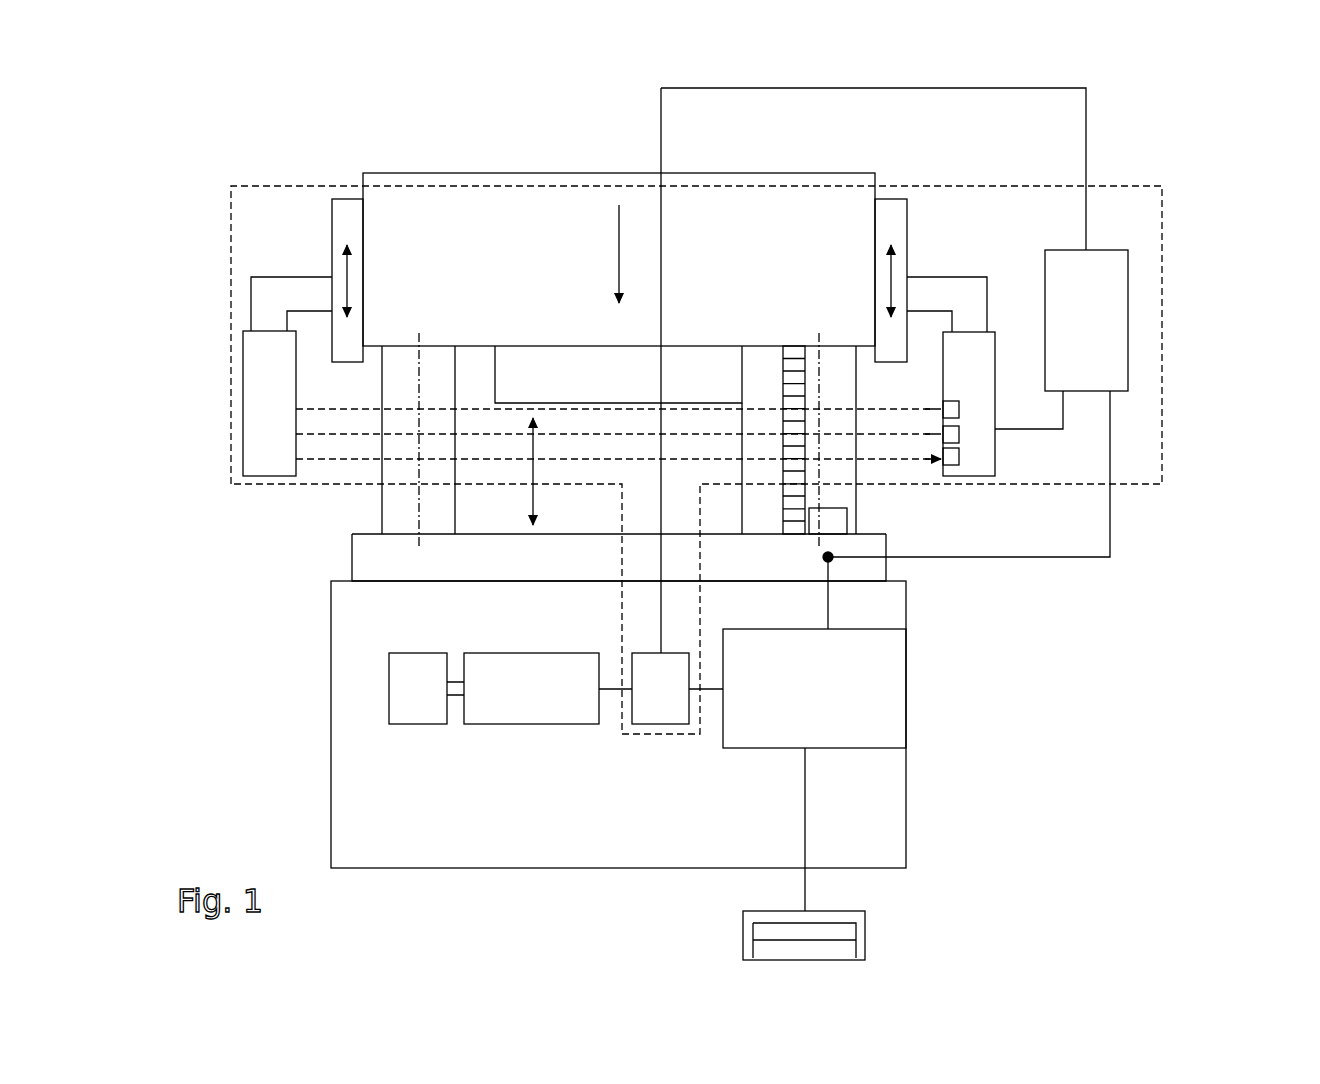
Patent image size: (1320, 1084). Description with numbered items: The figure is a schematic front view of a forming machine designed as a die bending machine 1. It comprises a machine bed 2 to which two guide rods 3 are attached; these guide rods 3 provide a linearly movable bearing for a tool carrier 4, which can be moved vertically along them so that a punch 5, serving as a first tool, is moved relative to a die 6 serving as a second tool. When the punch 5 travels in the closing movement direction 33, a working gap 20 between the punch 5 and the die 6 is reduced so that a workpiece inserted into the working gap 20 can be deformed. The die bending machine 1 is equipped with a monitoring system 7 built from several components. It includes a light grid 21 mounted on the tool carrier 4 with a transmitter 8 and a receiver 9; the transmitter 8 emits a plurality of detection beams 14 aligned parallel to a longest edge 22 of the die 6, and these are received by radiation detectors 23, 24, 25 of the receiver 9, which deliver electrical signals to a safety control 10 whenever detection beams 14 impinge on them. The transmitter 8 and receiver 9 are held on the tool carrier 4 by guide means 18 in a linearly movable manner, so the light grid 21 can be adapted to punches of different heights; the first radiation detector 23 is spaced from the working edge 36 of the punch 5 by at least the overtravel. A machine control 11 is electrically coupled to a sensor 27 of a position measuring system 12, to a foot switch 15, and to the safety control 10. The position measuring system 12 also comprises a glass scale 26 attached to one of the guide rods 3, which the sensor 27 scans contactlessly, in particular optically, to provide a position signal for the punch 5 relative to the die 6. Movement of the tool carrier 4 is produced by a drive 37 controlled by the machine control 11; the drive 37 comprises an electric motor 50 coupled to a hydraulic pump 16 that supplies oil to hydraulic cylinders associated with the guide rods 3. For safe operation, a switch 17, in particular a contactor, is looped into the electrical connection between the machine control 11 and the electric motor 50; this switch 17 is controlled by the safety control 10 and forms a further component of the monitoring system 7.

The die bending machine 1 is at (1103, 166).
The machine bed 2 is at (890, 814).
The guide rods 3 is at (390, 494).
The tool carrier 4 is at (813, 197).
The punch 5 is at (572, 365).
The die 6 is at (372, 565).
The monitoring system 7 is at (287, 185).
The transmitter 8 is at (246, 365).
The receiver 9 is at (990, 367).
The safety control 10 is at (1113, 322).
The machine control 11 is at (893, 688).
The position measuring system 12 is at (808, 556).
The detection beams 14 is at (485, 433).
The foot switch 15 is at (860, 916).
The hydraulic pump 16 is at (400, 710).
The switch 17 is at (650, 713).
The guide means 18 is at (351, 208).
The working gap 20 is at (533, 447).
The light grid 21 is at (318, 472).
The longest edge 22 is at (470, 534).
The first radiation detector 23 is at (959, 452).
The radiation detector 24 is at (959, 430).
The radiation detector 25 is at (959, 405).
The glass scale 26 is at (780, 390).
The sensor 27 is at (838, 525).
The closing movement direction 33 is at (619, 230).
The working edge 36 is at (691, 400).
The drive 37 is at (521, 750).
The electric motor 50 is at (578, 719).